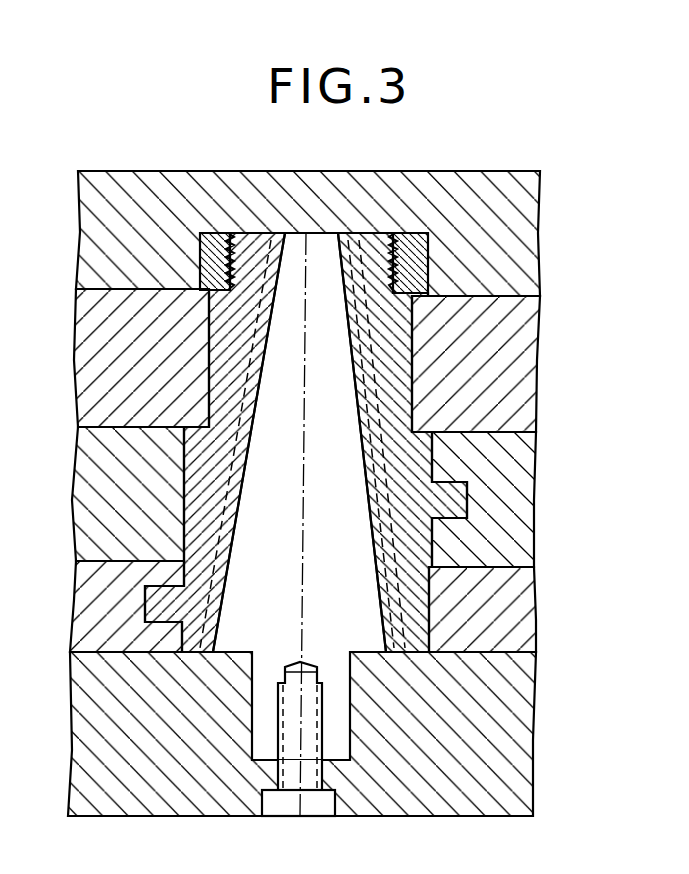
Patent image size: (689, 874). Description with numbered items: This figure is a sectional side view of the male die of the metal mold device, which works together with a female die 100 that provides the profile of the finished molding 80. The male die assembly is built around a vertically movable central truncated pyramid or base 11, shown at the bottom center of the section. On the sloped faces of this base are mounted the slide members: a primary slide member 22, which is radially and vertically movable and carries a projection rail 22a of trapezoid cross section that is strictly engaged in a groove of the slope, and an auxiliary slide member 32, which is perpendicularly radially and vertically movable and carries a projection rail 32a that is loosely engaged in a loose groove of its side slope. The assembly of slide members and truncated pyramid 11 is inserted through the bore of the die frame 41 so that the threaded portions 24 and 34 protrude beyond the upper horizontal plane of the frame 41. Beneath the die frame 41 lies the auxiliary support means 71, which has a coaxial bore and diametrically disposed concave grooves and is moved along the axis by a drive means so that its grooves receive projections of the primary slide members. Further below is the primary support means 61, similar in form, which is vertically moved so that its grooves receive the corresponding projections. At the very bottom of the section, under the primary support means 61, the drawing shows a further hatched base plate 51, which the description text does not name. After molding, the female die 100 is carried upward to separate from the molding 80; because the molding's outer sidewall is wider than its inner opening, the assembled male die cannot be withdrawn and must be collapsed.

The female die 100 is at (311, 476).
The finished molding 80 is at (374, 182).
The threaded portion 24 is at (200, 260).
The threaded portion 34 is at (425, 258).
The primary slide member 22 is at (210, 376).
The projection rail 22a is at (240, 474).
The auxiliary slide member 32 is at (405, 355).
The projection rail 32a is at (366, 470).
The die frame 41 is at (524, 404).
The auxiliary support means 71 is at (520, 538).
The primary support means 61 is at (522, 624).
The bottom plate 51 is at (522, 751).
The truncated pyramid 11 is at (252, 612).